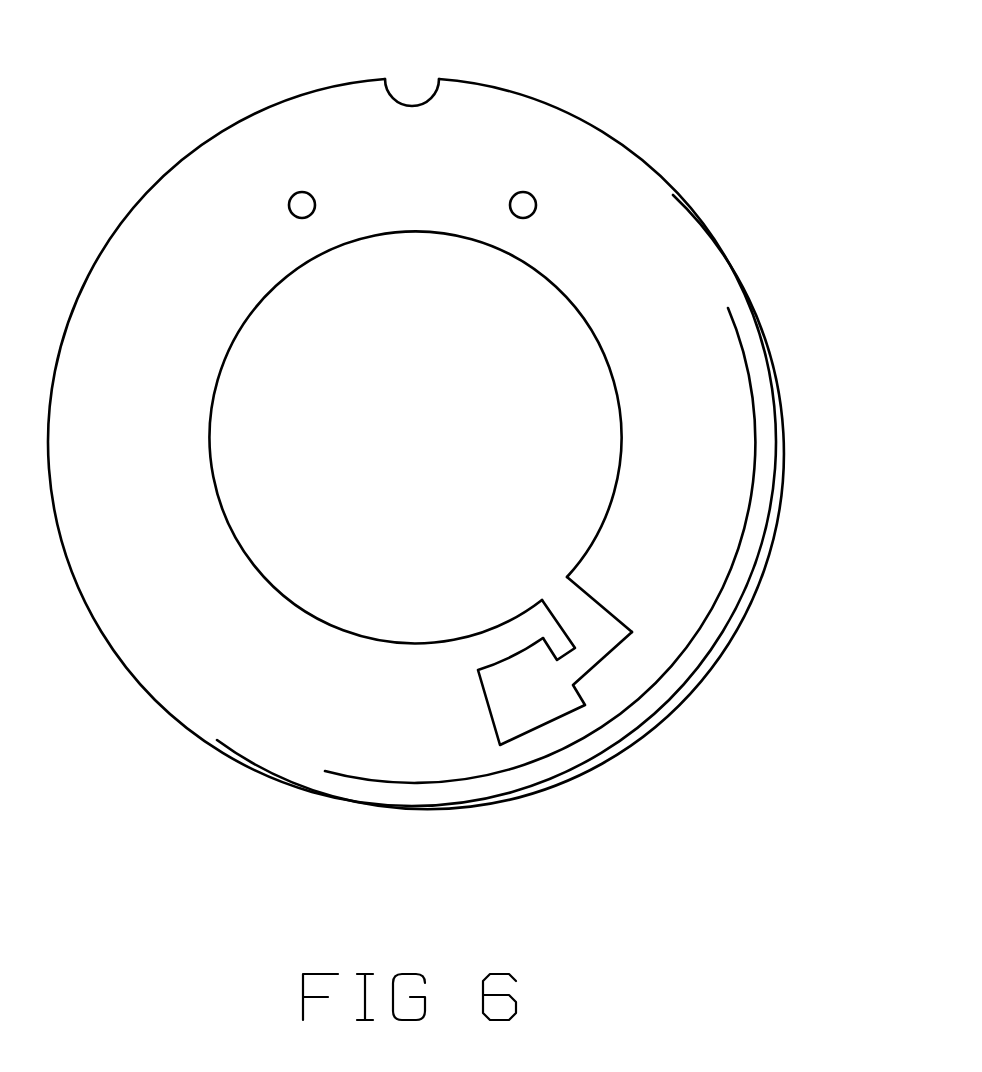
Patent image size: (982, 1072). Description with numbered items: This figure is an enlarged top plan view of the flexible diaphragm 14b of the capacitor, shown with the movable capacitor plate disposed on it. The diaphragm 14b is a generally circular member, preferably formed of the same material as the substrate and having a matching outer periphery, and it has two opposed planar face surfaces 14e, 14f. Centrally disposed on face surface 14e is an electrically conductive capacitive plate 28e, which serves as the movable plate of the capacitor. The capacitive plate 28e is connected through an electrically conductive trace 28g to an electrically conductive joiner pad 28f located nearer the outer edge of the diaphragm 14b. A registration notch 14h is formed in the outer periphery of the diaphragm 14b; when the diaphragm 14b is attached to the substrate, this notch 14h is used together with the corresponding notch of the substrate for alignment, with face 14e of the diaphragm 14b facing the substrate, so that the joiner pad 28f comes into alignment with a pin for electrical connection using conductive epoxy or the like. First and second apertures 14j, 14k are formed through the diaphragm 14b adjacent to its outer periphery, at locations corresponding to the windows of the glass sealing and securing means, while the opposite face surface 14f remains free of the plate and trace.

The flexible diaphragm 14b is at (748, 292).
The registration notch 14h is at (397, 92).
The first aperture 14j is at (287, 197).
The second aperture 14k is at (537, 195).
The planar face surface 14e is at (718, 383).
The planar face surface 14f is at (722, 475).
The capacitive plate 28e is at (420, 543).
The trace 28g is at (590, 625).
The joiner pad 28f is at (532, 705).